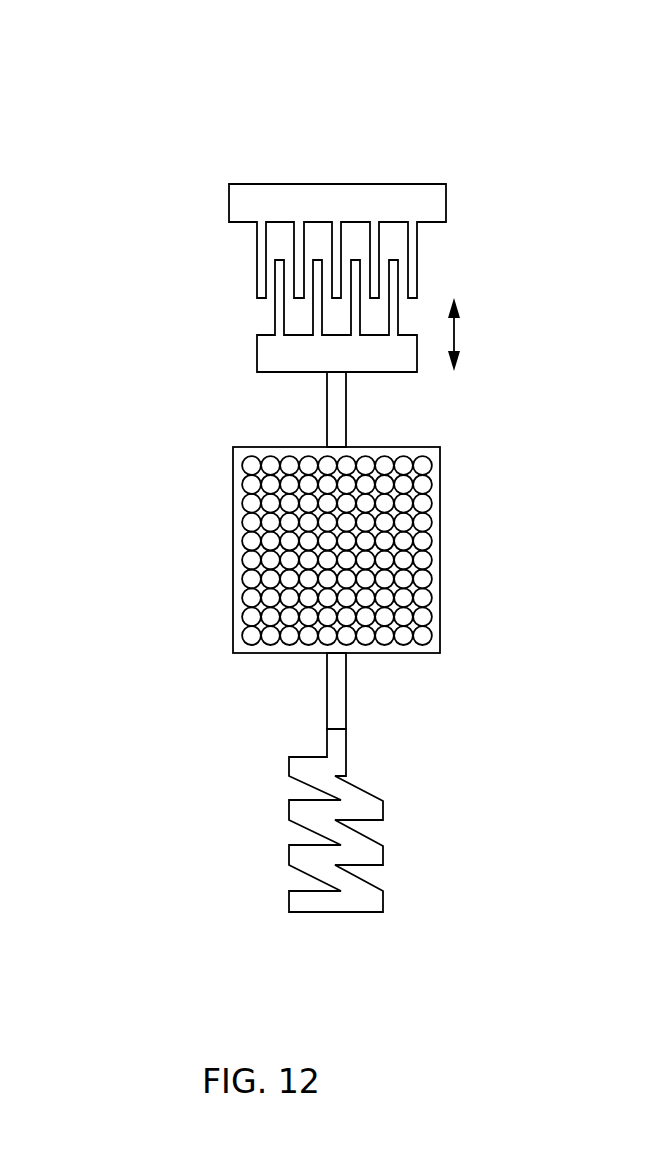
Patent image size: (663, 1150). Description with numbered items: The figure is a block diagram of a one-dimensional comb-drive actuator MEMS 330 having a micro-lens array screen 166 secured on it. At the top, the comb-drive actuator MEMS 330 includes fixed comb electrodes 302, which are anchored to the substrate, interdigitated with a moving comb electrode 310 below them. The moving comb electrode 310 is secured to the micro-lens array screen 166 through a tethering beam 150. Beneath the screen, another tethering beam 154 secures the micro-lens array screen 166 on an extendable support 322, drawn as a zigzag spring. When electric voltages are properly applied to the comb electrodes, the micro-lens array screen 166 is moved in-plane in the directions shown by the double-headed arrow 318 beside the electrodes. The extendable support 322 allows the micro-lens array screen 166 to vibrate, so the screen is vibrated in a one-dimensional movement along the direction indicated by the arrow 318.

The comb-drive actuator MEMS 330 is at (108, 111).
The fixed comb electrodes 302 is at (229, 208).
The moving comb electrode 310 is at (257, 355).
The arrow 318 is at (479, 334).
The tethering beam 150 is at (346, 417).
The micro-lens array screen 166 is at (430, 447).
The tethering beam 154 is at (346, 708).
The extendable support 322 is at (362, 793).